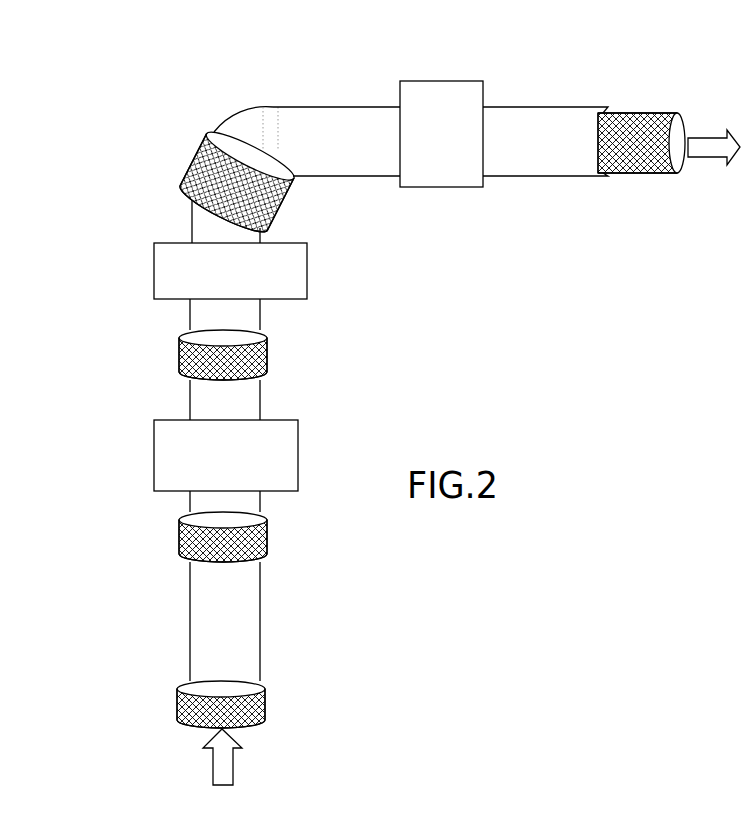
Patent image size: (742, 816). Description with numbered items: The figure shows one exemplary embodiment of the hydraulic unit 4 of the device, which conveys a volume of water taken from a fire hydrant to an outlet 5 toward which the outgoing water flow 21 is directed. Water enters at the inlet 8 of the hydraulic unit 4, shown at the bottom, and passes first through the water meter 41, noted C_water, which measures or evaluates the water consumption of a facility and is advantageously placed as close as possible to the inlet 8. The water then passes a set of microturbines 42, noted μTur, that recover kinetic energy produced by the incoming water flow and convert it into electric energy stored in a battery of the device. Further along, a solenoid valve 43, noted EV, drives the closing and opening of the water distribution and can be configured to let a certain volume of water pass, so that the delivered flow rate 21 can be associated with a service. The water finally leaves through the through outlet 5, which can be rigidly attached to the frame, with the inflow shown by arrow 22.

The hydraulic unit 4 is at (336, 93).
The solenoid valve 43 is at (445, 88).
The outlet 5 is at (642, 114).
The outgoing water flow 21 is at (713, 160).
The microturbines 42 is at (153, 273).
The water meter 41 is at (153, 452).
The inlet 8 is at (177, 711).
The inlet flow 22 is at (224, 772).